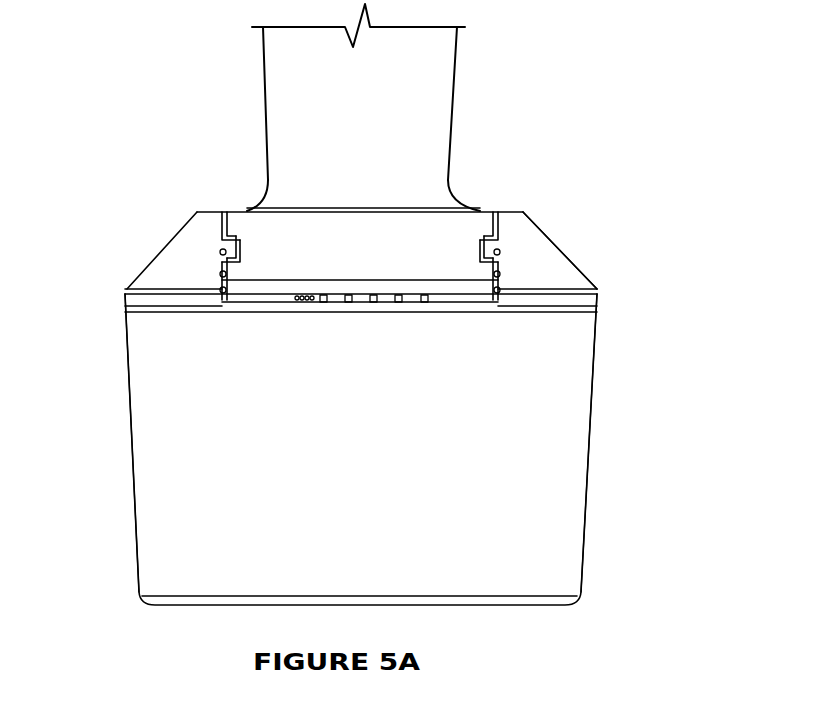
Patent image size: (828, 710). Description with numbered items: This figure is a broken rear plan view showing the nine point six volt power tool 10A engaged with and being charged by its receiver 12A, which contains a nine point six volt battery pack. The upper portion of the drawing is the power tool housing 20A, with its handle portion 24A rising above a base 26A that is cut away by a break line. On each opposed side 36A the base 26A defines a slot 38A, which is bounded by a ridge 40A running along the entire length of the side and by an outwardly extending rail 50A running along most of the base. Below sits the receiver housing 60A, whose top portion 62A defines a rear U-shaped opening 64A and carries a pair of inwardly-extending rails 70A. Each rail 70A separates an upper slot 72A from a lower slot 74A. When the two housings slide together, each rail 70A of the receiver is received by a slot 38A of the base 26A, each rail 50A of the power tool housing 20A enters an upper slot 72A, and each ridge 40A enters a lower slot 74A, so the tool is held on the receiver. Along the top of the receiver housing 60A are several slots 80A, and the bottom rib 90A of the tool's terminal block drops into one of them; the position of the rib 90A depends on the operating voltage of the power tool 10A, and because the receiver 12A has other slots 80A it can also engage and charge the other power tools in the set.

The power tool 10A is at (472, 45).
The receiver 12A is at (609, 446).
The power tool housing 20A is at (455, 118).
The handle portion 24A is at (262, 57).
The base 26A is at (252, 204).
The side 36A is at (200, 215).
The slot 38A is at (238, 252).
The ridge 40A is at (222, 263).
The rail 50A is at (240, 212).
The receiver housing 60A is at (587, 508).
The top portion 62A is at (500, 211).
The rear U-shaped opening 64A is at (218, 310).
The rail 70A is at (220, 250).
The upper slot 72A is at (228, 211).
The lower slot 74A is at (218, 303).
The slot 80A is at (455, 330).
The bottom rib 90A is at (293, 301).